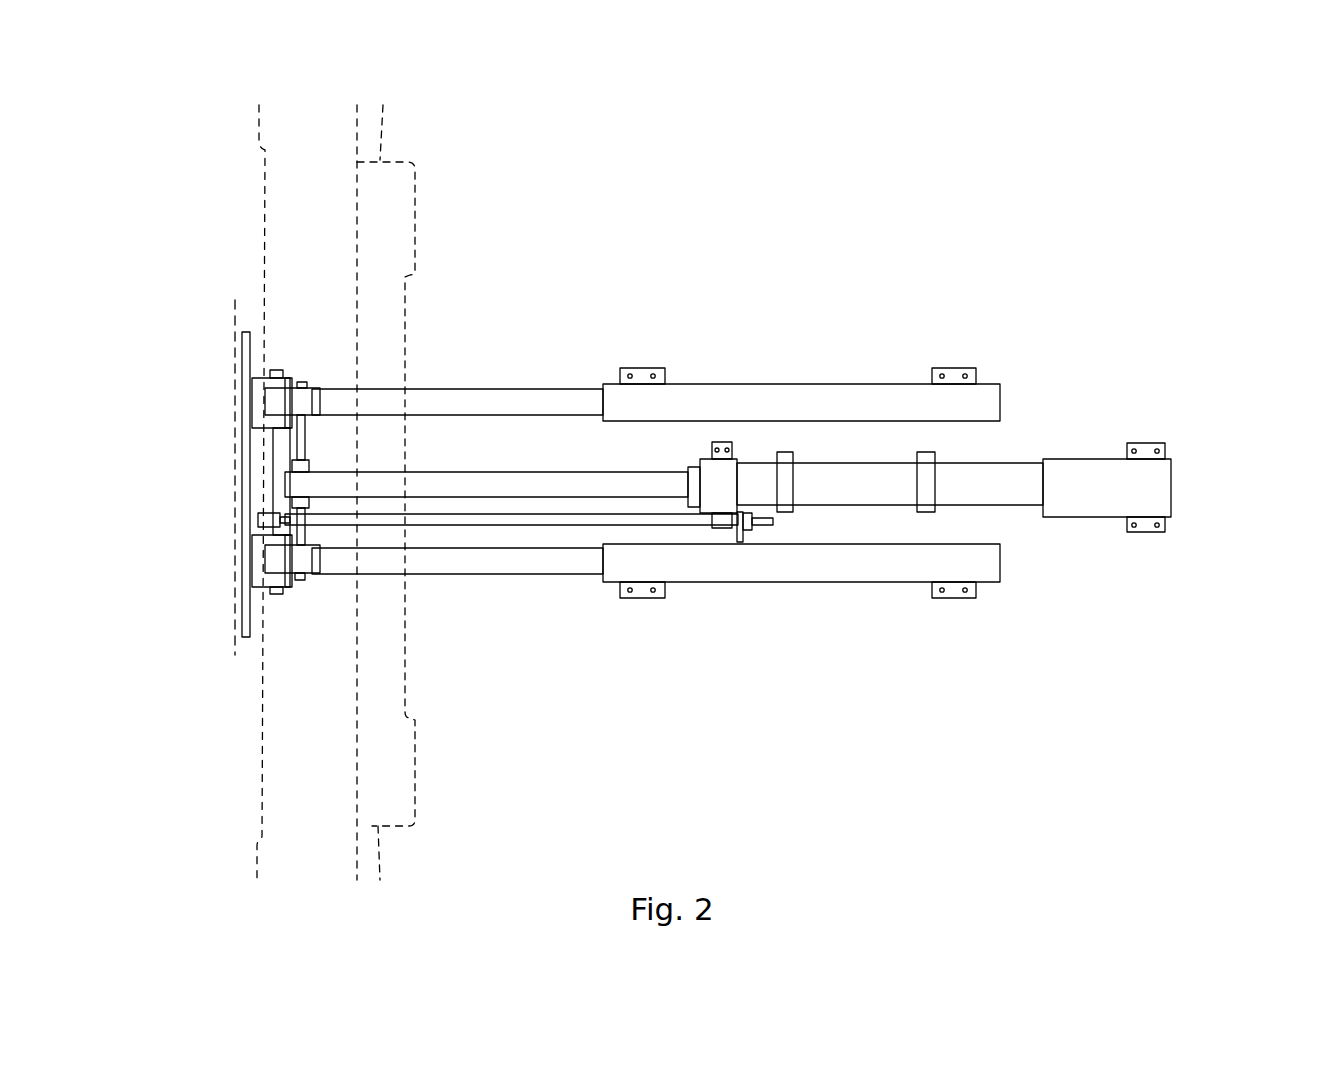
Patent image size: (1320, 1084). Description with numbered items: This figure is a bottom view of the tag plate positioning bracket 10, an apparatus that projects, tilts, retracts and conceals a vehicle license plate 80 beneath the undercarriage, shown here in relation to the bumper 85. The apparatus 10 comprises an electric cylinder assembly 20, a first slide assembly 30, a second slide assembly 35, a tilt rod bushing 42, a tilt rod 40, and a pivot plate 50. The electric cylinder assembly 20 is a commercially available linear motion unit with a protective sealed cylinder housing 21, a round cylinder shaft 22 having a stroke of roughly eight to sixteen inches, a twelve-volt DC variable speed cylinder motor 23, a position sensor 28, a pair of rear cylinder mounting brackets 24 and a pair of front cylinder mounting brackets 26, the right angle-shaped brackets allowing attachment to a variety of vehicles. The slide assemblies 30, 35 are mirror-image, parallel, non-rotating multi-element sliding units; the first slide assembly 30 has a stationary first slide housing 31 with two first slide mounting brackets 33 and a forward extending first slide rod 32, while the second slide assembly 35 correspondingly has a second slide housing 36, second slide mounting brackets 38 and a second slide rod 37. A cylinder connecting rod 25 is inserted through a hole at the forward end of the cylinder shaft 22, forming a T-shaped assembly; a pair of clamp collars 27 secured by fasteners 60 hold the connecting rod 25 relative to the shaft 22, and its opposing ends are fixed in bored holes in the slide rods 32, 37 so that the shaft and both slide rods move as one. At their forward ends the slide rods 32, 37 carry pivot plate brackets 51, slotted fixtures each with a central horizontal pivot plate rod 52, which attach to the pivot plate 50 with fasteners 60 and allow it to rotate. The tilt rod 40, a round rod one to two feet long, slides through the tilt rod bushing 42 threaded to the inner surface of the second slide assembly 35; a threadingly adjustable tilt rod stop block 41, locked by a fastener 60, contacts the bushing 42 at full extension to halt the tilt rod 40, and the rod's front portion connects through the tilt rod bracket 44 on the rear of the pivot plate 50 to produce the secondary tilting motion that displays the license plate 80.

The tag plate positioning bracket 10 is at (1176, 240).
The electric cylinder assembly 20 is at (1016, 515).
The cylinder housing 21 is at (1015, 483).
The cylinder shaft 22 is at (438, 480).
The cylinder motor 23 is at (1120, 497).
The rear cylinder mounting bracket 24 is at (1168, 447).
The cylinder connecting rod 25 is at (302, 530).
The front cylinder mounting bracket 26 is at (716, 512).
The clamp collar 27 is at (292, 503).
The position sensor 28 is at (790, 453).
The first slide assembly 30 is at (585, 390).
The first slide housing 31 is at (990, 398).
The first slide rod 32 is at (408, 393).
The first slide mounting bracket 33 is at (645, 367).
The second slide assembly 35 is at (747, 586).
The second slide housing 36 is at (865, 565).
The second slide rod 37 is at (408, 565).
The second slide mounting bracket 38 is at (652, 598).
The tilt rod 40 is at (480, 522).
The tilt rod stop block 41 is at (752, 531).
The tilt rod bushing 42 is at (740, 530).
The tilt rod bracket 44 is at (256, 521).
The pivot plate 50 is at (242, 507).
The pivot plate bracket 51 is at (262, 398).
The pivot plate rod 52 is at (279, 443).
The fastener 60 is at (305, 382).
The license plate 80 is at (238, 633).
The bumper 85 is at (262, 697).